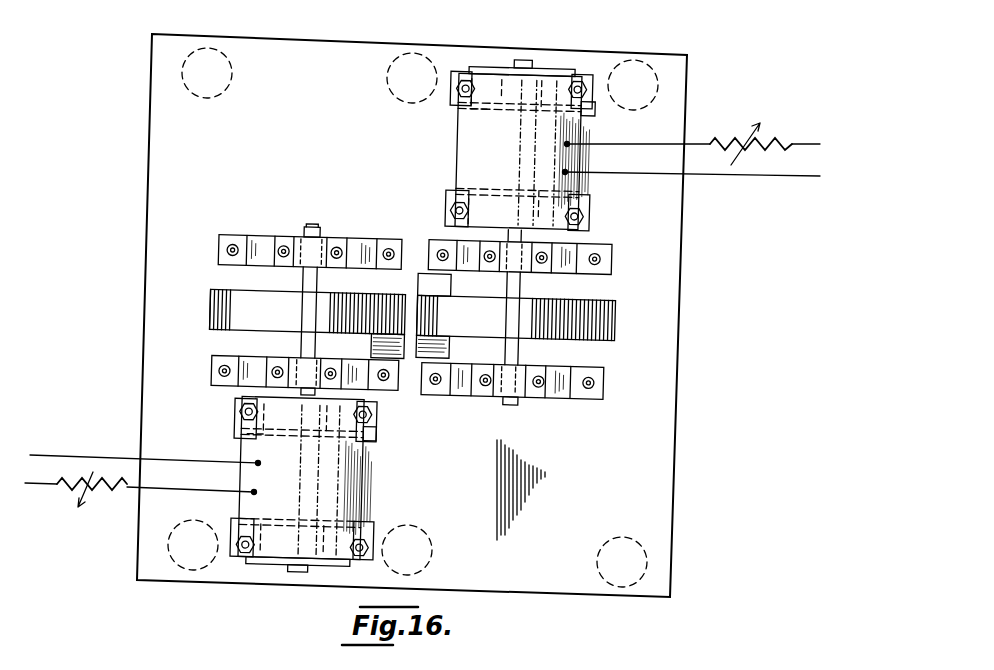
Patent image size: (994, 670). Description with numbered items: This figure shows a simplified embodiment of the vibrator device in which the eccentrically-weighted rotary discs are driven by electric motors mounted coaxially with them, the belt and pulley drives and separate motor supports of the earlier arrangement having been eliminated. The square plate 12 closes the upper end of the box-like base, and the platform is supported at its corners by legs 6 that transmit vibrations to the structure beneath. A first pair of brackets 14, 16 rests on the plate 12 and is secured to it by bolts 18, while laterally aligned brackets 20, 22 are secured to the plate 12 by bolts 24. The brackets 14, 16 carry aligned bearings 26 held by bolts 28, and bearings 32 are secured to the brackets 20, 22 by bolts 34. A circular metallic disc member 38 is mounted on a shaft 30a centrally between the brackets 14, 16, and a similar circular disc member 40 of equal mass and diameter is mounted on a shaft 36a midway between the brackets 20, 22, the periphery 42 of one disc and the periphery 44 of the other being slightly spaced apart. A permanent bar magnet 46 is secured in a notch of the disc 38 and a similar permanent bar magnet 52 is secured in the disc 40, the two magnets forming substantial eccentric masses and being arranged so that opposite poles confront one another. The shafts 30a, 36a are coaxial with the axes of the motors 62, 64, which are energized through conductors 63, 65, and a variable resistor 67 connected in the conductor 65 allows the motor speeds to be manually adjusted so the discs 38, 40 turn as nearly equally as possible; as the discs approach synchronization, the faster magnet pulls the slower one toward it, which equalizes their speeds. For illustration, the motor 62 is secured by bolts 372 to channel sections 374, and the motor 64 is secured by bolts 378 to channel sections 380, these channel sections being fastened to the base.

The legs 6 is at (217, 50).
The square plate 12 is at (672, 499).
The bracket 14 is at (272, 265).
The bracket 16 is at (258, 356).
The bolts 18 is at (229, 239).
The bracket 20 is at (575, 245).
The bracket 22 is at (576, 369).
The bolts 24 is at (440, 254).
The bearings 26 is at (332, 260).
The bolts 28 is at (278, 237).
The shaft 30a is at (312, 229).
The bearings 32 is at (496, 270).
The bolts 34 is at (541, 266).
The shaft 36a is at (512, 403).
The circular disc member 38 is at (210, 304).
The circular disc member 40 is at (597, 298).
The periphery 42 is at (288, 314).
The periphery 44 is at (604, 315).
The permanent bar magnet 46 is at (372, 343).
The permanent bar magnet 52 is at (451, 346).
The motor 62 is at (362, 466).
The conductor 63 is at (722, 174).
The motor 64 is at (464, 138).
The conductor 65 is at (704, 142).
The variable resistor 67 is at (736, 132).
The bolts 372 is at (256, 528).
The channel sections 374 is at (374, 428).
The bolts 378 is at (478, 104).
The channel sections 380 is at (590, 110).